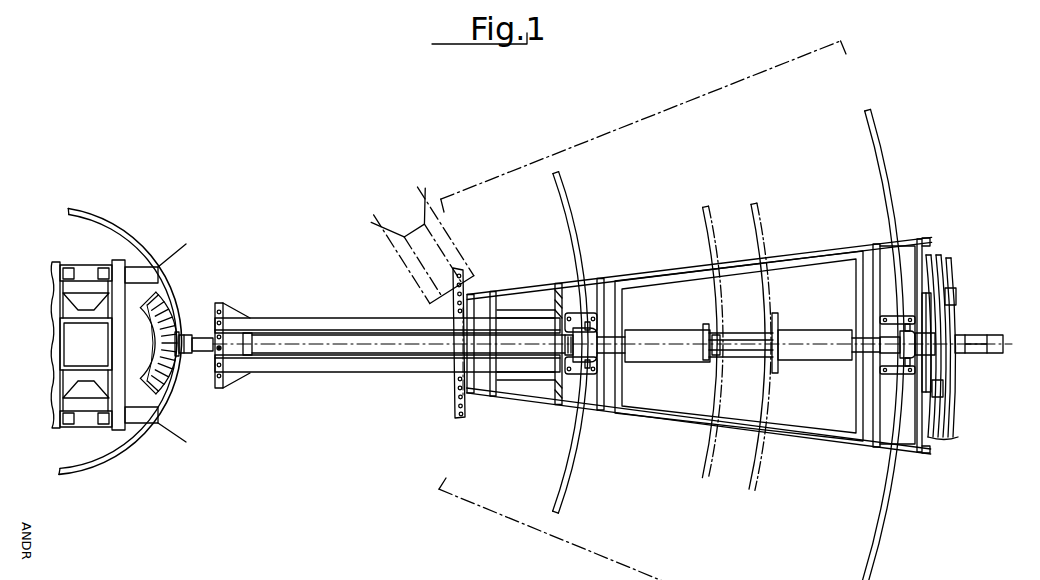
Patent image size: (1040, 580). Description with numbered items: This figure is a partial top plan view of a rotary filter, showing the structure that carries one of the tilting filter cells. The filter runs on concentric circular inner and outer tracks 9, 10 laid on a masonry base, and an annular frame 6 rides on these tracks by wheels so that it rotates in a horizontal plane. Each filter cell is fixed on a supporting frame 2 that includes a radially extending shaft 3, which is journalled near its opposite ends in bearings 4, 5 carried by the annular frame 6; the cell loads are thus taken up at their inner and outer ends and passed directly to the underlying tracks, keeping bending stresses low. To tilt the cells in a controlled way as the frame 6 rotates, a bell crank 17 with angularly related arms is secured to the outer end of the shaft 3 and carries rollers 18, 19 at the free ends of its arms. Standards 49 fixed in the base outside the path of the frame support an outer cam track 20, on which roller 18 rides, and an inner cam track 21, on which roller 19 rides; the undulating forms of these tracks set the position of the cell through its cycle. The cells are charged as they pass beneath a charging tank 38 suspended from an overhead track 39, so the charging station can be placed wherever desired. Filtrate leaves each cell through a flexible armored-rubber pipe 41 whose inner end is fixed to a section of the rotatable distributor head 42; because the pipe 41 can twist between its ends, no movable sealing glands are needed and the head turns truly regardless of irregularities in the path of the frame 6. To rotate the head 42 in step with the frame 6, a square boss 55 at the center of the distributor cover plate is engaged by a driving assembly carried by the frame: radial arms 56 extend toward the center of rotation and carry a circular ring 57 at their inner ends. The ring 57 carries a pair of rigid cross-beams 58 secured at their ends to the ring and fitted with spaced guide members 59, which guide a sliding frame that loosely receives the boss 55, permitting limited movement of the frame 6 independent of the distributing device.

The supporting frame 2 is at (628, 284).
The radially extending shaft 3 is at (612, 350).
The bearing 4 is at (582, 356).
The bearing 5 is at (887, 372).
The annular frame 6 is at (908, 257).
The inner track 9 is at (562, 498).
The outer track 10 is at (882, 518).
The bell crank 17 is at (931, 324).
The roller 18 is at (955, 294).
The roller 19 is at (943, 388).
The outer cam track 20 is at (948, 262).
The inner cam track 21 is at (947, 437).
The charging tank 38 is at (751, 357).
The track 39 is at (752, 478).
The flexible pipe 41 is at (182, 357).
The rotatable head 42 is at (163, 343).
The standard 49 is at (985, 347).
The square boss 55 is at (78, 330).
The radial arms 56 is at (382, 366).
The circular ring 57 is at (205, 412).
The cross-beams 58 is at (137, 272).
The guide members 59 is at (105, 270).